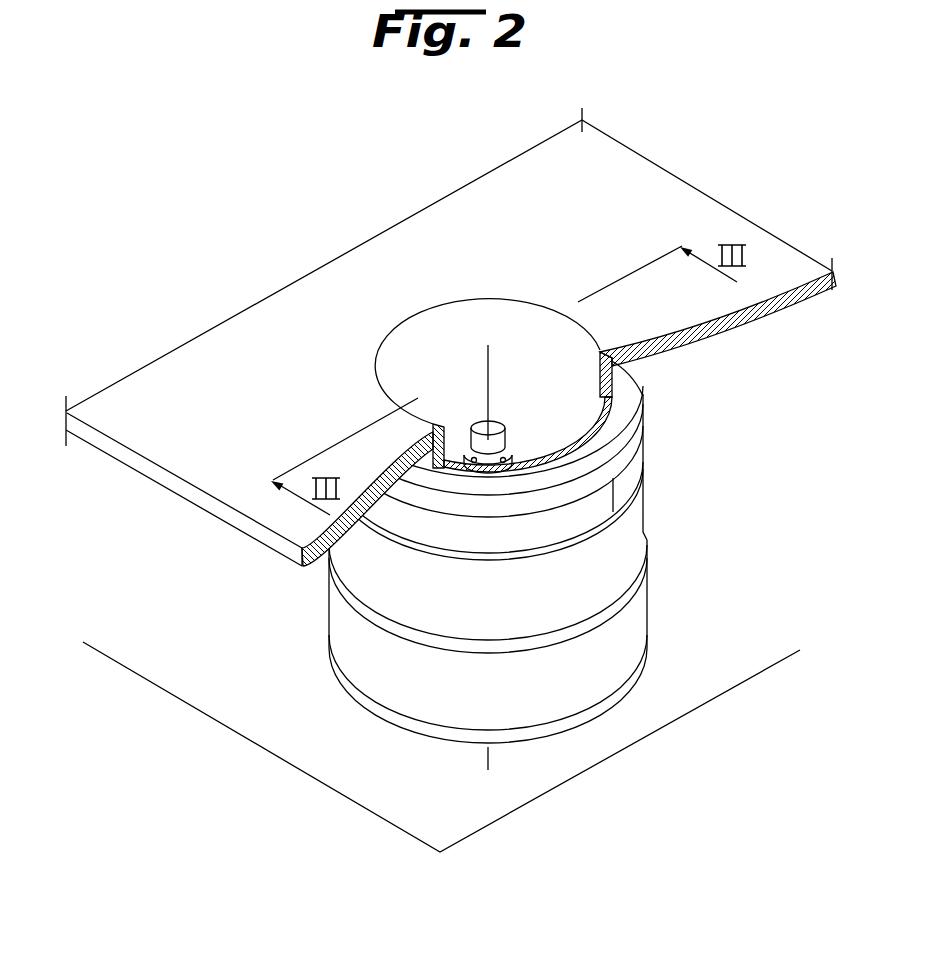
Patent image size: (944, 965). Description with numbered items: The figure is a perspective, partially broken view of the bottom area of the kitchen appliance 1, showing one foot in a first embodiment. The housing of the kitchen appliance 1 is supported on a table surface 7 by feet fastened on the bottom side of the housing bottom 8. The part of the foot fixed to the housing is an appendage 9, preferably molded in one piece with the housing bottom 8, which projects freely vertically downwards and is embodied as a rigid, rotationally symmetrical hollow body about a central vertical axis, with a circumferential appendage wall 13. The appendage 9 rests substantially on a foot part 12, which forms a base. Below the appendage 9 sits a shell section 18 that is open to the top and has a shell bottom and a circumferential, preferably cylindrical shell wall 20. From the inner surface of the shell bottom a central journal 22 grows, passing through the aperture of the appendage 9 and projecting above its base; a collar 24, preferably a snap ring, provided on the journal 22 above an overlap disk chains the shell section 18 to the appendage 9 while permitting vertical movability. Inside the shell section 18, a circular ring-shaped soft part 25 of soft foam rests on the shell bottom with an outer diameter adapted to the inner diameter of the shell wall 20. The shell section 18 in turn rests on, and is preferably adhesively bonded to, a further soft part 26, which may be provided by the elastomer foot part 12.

The kitchen appliance 1 is at (631, 113).
The table surface 7 is at (543, 753).
The housing bottom 8 is at (667, 184).
The appendage 9 is at (668, 399).
The foot part 12 is at (438, 731).
The appendage wall 13 is at (582, 518).
The shell section 18 is at (591, 590).
The shell wall 20 is at (622, 553).
The journal 22 is at (478, 428).
The collar 24 is at (466, 450).
The soft part 25 is at (624, 488).
The soft part 26 is at (553, 662).